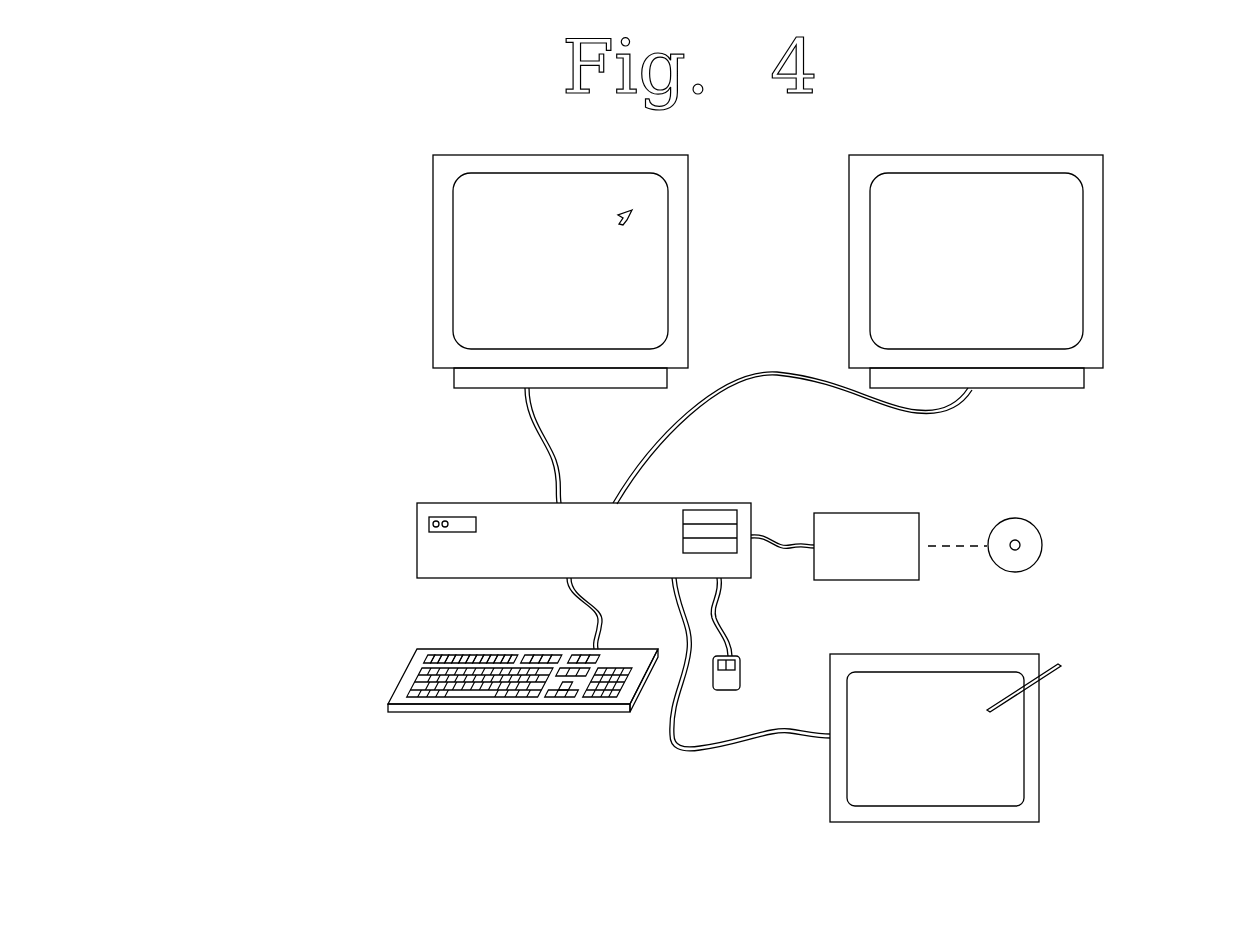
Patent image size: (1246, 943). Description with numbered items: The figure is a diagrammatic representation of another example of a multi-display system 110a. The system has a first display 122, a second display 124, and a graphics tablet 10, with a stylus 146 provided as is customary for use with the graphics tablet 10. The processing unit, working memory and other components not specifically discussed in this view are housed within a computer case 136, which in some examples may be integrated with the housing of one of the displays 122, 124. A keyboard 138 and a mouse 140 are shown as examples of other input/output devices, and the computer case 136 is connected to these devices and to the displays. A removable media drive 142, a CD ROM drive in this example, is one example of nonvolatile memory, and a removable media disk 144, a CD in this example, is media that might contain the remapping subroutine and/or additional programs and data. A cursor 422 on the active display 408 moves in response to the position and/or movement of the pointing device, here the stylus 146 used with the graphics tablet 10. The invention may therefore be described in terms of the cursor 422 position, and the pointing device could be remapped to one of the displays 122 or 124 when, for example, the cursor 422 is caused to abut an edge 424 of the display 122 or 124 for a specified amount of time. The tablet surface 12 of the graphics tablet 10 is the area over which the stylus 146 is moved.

The multi-display system 110a is at (340, 277).
The first display 122 is at (655, 242).
The second display 124 is at (1072, 257).
The edge 424 is at (453, 265).
The cursor 422 is at (618, 215).
The active display 408 is at (595, 285).
The computer case 136 is at (522, 527).
The removable media drive 142 is at (878, 523).
The removable media disk 144 is at (1028, 528).
The mouse 140 is at (741, 676).
The keyboard 138 is at (405, 680).
The stylus 146 is at (1062, 668).
The graphics tablet 10 is at (1039, 766).
The tablet writing surface 12 is at (973, 755).